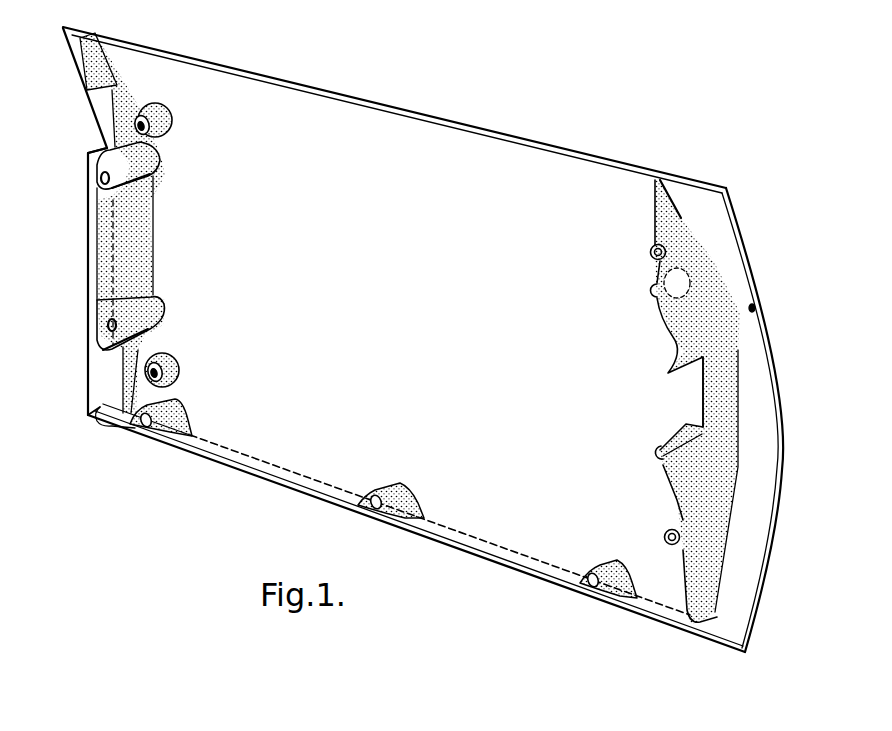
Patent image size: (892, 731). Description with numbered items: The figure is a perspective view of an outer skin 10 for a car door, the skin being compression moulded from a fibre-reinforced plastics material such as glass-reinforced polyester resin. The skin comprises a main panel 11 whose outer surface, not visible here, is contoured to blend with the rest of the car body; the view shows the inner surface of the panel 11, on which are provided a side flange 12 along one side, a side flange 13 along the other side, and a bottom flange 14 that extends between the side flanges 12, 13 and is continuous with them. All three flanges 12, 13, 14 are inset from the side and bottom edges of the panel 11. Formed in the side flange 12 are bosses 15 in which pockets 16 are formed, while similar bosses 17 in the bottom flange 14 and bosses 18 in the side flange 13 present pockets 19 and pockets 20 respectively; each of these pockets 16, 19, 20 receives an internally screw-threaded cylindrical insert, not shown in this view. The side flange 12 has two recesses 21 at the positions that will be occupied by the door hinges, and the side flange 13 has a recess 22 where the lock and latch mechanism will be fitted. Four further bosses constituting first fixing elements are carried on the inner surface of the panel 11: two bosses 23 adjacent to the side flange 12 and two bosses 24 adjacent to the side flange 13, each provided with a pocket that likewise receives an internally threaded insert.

The outer skin 10 is at (531, 136).
The main panel 11 is at (397, 116).
The side flange 12 is at (142, 262).
The side flange 13 is at (713, 538).
The bottom flange 14 is at (315, 482).
The bosses 15 is at (152, 153).
The pockets 16 is at (104, 180).
The bosses 17 is at (178, 420).
The bosses 18 is at (652, 256).
The pockets 19 is at (141, 426).
The pockets 20 is at (654, 246).
The recesses 21 is at (105, 152).
The recess 22 is at (699, 394).
The bosses 23 is at (162, 108).
The bosses 24 is at (652, 293).